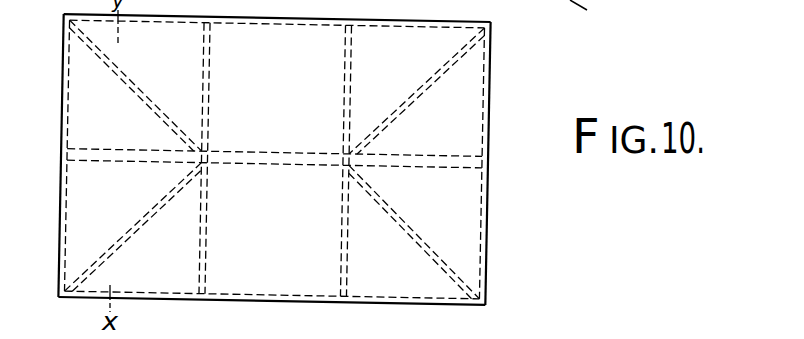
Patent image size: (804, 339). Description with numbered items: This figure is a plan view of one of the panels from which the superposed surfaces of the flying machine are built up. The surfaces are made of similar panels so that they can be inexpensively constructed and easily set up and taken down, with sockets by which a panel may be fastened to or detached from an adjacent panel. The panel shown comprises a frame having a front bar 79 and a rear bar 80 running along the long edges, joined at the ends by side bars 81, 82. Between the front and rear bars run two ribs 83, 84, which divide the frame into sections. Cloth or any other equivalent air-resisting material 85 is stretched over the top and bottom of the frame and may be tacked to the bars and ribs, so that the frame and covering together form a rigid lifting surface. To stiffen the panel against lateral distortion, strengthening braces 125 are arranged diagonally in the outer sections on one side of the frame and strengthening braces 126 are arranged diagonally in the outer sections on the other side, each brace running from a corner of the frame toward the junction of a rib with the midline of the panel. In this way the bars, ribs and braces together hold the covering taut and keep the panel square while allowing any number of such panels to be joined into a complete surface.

The front bar 79 is at (268, 301).
The rear bar 80 is at (432, 26).
The side bar 81 is at (484, 191).
The side bar 82 is at (61, 189).
The rib 83 is at (342, 253).
The rib 84 is at (206, 212).
The air-resisting material 85 is at (274, 193).
The strengthening brace 125 is at (147, 97).
The strengthening brace 126 is at (137, 228).